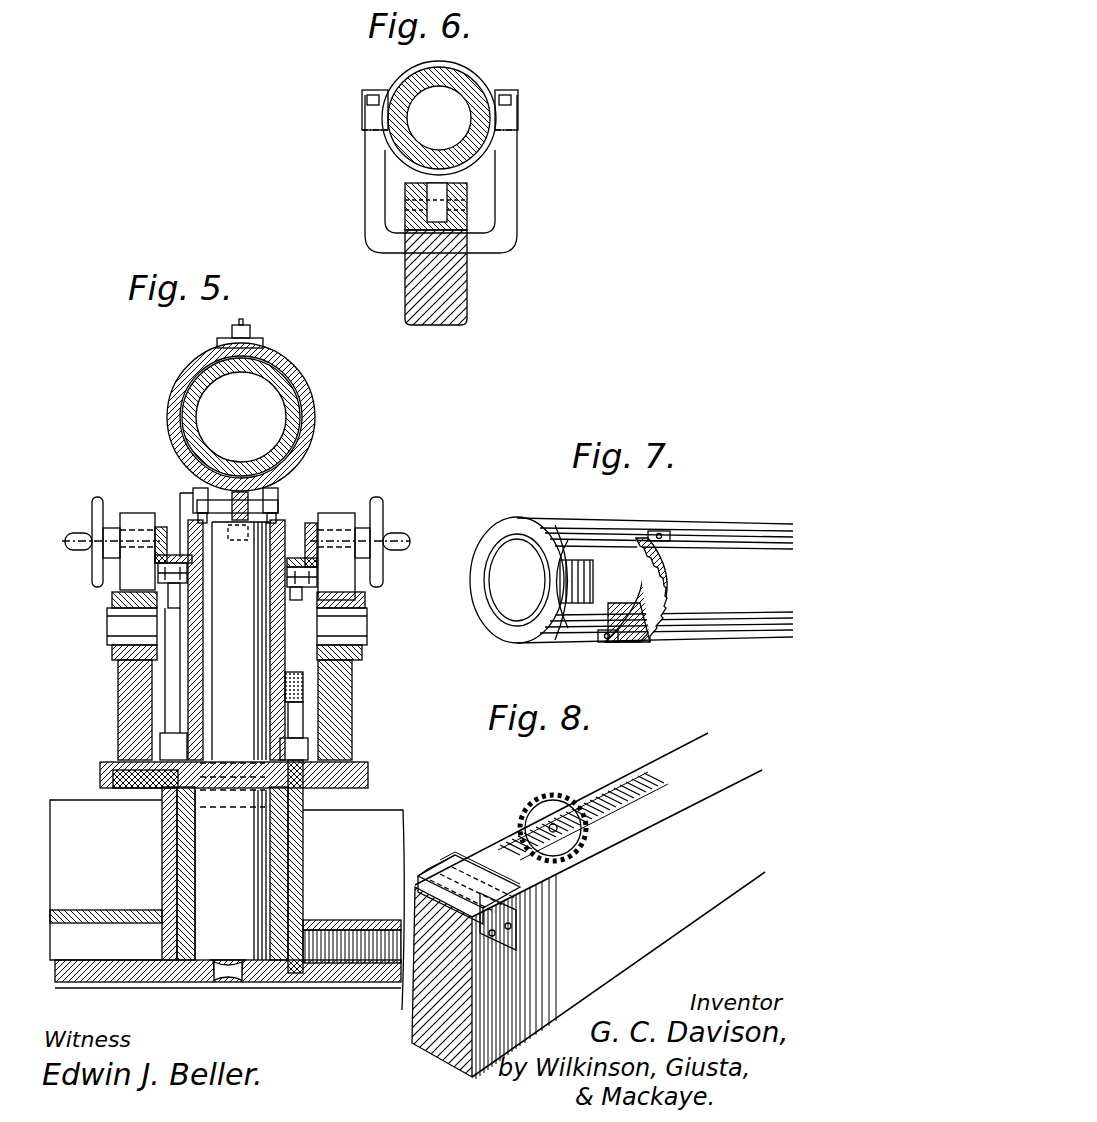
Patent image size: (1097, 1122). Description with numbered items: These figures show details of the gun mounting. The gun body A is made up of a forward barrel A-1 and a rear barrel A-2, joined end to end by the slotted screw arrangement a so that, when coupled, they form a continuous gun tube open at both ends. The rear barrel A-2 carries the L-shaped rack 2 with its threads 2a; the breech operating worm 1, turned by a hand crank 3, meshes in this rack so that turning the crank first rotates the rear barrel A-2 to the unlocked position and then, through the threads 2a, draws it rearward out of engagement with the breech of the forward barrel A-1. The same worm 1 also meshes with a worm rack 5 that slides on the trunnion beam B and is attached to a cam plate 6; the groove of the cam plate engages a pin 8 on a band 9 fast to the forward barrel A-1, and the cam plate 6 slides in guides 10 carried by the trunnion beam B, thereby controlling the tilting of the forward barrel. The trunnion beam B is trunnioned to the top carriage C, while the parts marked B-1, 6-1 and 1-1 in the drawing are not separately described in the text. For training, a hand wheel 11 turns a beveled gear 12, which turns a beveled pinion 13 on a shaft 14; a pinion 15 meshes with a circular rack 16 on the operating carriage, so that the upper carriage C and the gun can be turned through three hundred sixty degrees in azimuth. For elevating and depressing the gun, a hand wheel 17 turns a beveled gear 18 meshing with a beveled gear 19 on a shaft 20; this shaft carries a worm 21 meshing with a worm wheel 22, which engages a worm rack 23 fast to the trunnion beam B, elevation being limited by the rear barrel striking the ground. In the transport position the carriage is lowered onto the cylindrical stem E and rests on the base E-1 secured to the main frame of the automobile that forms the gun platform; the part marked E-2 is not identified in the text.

In FIG. 5, the worm 1 is at (240, 492).
In FIG. 8, the worm 1 is at (552, 798).
In FIG. 5, the base member 1-1 is at (92, 908).
In FIG. 7, the L-shaped rack 2 is at (668, 548).
In FIG. 7, the threads 2a is at (640, 632).
In FIG. 5, the hand crank 3 is at (190, 518).
In FIG. 8, the worm rack 5 is at (612, 805).
In FIG. 6, the cam plate 6 is at (468, 216).
In FIG. 8, the cam plate 6 is at (470, 862).
In FIG. 6, the clamp screw 6-1 is at (372, 118).
In FIG. 6, the pin 8 is at (410, 200).
In FIG. 6, the band 9 is at (487, 84).
In FIG. 8, the guides 10 is at (518, 920).
In FIG. 5, the hand wheel 11 is at (97, 497).
In FIG. 5, the beveled gear 12 is at (140, 513).
In FIG. 5, the beveled pinion 13 is at (168, 527).
In FIG. 5, the shaft 14 is at (172, 690).
In FIG. 5, the pinion 15 is at (140, 790).
In FIG. 5, the circular rack 16 is at (115, 788).
In FIG. 5, the hand wheel 17 is at (377, 497).
In FIG. 5, the beveled gear 18 is at (335, 513).
In FIG. 5, the beveled gear 19 is at (308, 523).
In FIG. 5, the shaft 20 is at (298, 722).
In FIG. 5, the worm 21 is at (298, 690).
In FIG. 5, the worm wheel 22 is at (286, 667).
In FIG. 5, the worm rack 23 is at (291, 528).
In FIG. 5, the ring A is at (308, 383).
In FIG. 6, the forward barrel A-1 is at (392, 143).
In FIG. 5, the forward barrel A-1 is at (316, 405).
In FIG. 7, the rear barrel A-2 is at (755, 626).
In FIG. 7, the slotted screw arrangement a is at (580, 560).
In FIG. 6, the trunnion beam B is at (470, 282).
In FIG. 5, the trunnion beam B is at (360, 748).
In FIG. 8, the trunnion beam B is at (645, 895).
In FIG. 6, the bracket B-1 is at (517, 208).
In FIG. 5, the top carriage C is at (310, 850).
In FIG. 5, the cylindrical stem E is at (310, 822).
In FIG. 5, the base E-1 is at (398, 830).
In FIG. 5, the bottom plate E-2 is at (337, 985).